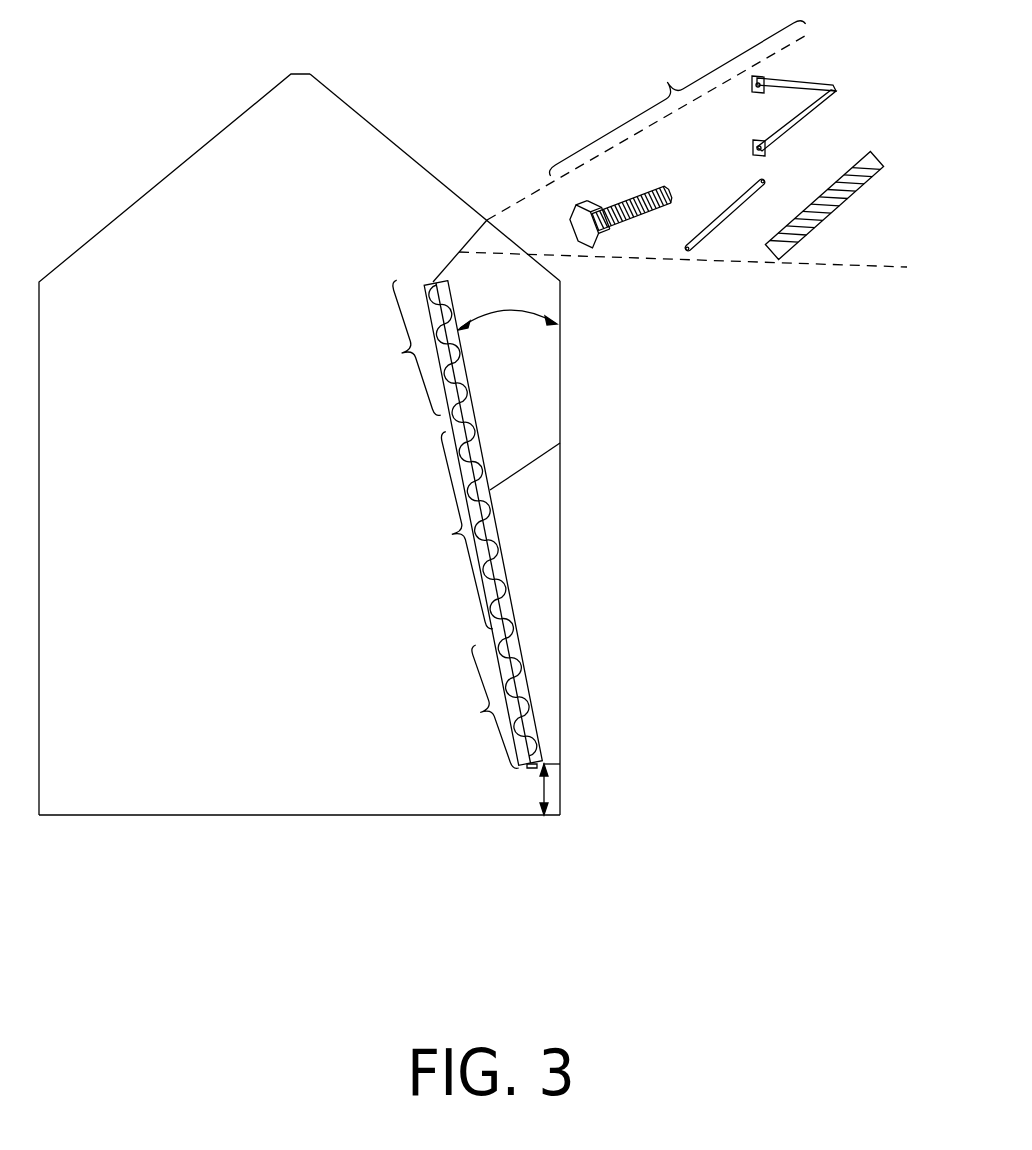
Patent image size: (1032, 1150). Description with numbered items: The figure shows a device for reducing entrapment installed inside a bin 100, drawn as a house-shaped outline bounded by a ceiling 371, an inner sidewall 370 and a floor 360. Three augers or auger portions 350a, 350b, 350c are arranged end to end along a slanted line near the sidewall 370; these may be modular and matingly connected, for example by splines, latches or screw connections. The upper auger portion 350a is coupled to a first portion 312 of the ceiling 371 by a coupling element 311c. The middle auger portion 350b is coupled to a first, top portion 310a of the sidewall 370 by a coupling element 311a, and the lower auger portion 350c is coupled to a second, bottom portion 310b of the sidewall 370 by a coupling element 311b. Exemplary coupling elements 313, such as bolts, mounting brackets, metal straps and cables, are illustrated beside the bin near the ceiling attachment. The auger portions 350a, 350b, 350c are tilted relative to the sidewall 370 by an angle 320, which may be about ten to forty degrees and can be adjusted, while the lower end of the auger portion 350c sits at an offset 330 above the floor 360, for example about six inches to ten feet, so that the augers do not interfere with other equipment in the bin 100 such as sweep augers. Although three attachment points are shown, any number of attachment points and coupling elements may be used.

The bin 100 is at (156, 279).
The ceiling 371 is at (377, 133).
The inner sidewall 370 is at (560, 378).
The floor 360 is at (505, 815).
The coupling element 311c is at (457, 257).
The first portion of the ceiling 312 is at (467, 238).
The coupling elements 313 is at (717, 140).
The angle 320 is at (523, 366).
The first portion of sidewall 310a is at (560, 443).
The coupling element 311a is at (508, 480).
The second portion of sidewall 310b is at (563, 763).
The coupling element 311b is at (552, 766).
The offset 330 is at (550, 790).
The upper auger portion 350a is at (380, 347).
The middle auger portion 350b is at (431, 530).
The lower auger portion 350c is at (464, 706).